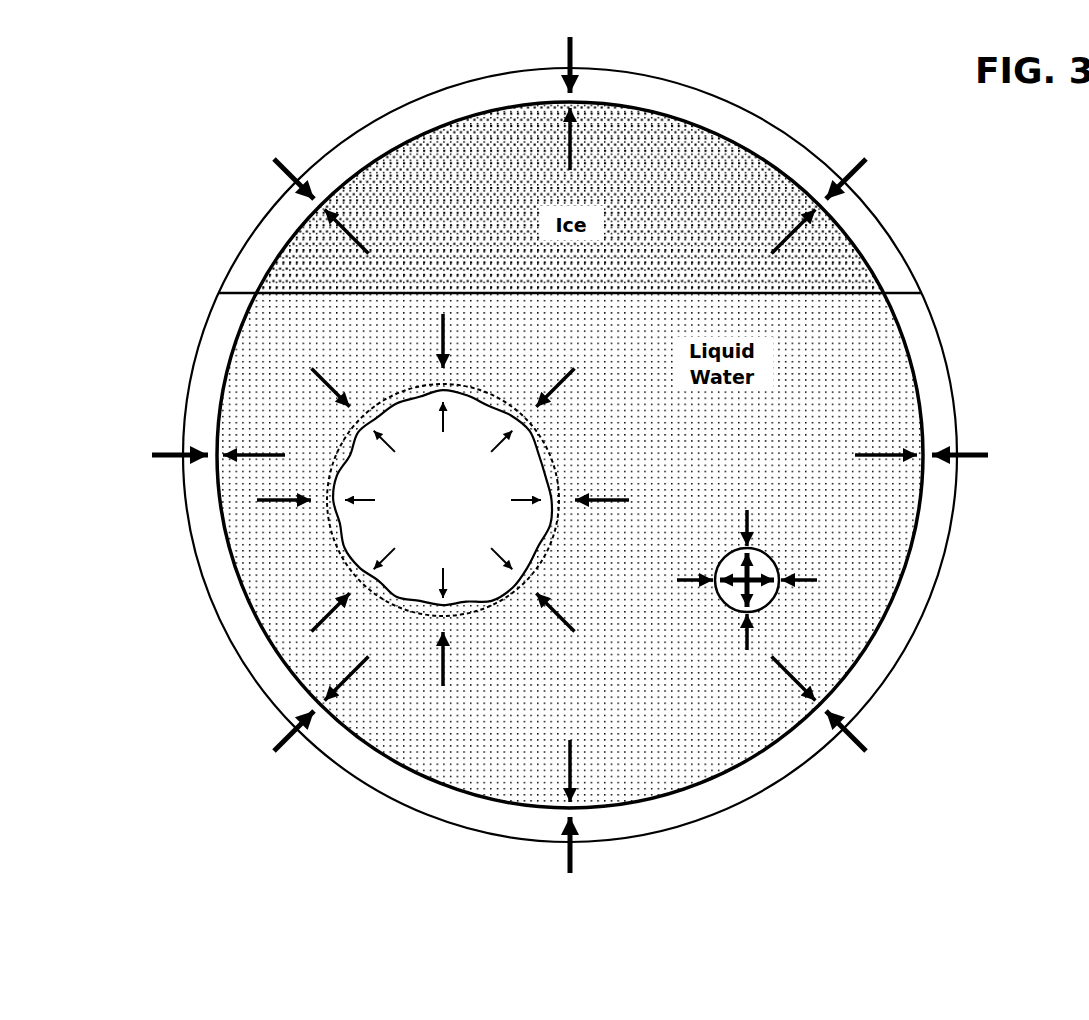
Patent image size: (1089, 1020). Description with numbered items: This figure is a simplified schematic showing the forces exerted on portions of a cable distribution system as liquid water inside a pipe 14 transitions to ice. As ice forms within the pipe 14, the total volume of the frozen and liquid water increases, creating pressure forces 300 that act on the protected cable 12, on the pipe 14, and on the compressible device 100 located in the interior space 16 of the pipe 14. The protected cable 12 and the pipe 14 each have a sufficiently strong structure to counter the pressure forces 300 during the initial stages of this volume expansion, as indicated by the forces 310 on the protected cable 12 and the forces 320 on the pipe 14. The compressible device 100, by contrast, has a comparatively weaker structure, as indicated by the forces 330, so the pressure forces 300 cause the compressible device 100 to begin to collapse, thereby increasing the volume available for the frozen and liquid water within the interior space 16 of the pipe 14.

The protected cable 12 is at (860, 593).
The pipe 14 is at (238, 272).
The interior space 16 is at (230, 357).
The compressible device 100 is at (340, 556).
The pressure forces 300 is at (372, 240).
The forces 310 is at (752, 553).
The forces 320 is at (866, 157).
The forces 330 is at (393, 556).